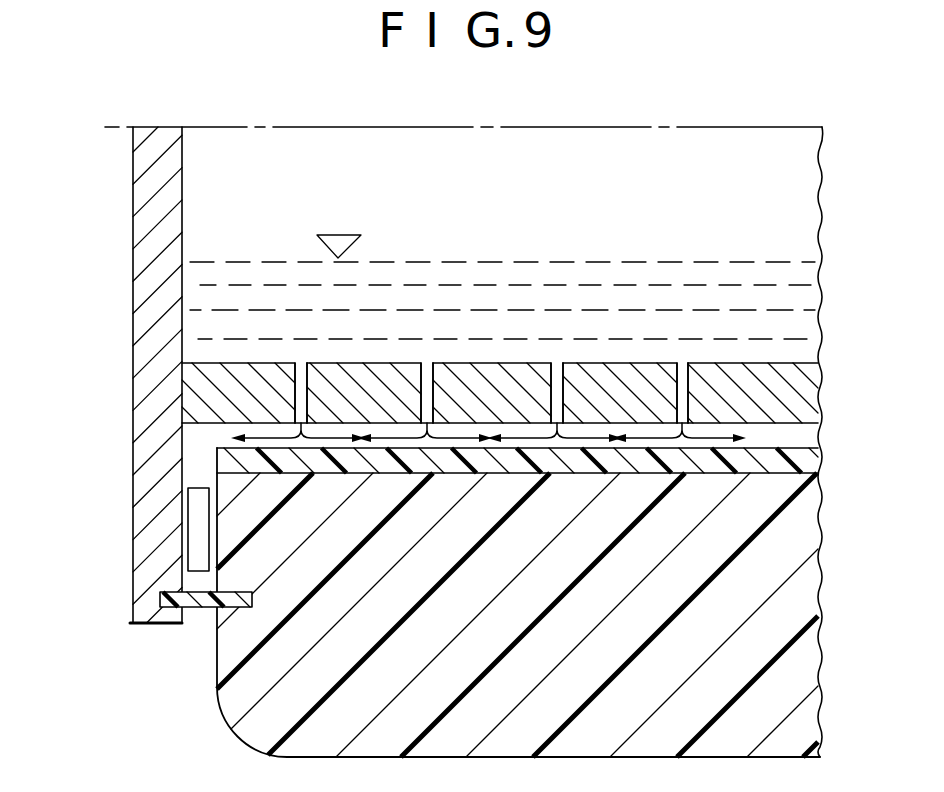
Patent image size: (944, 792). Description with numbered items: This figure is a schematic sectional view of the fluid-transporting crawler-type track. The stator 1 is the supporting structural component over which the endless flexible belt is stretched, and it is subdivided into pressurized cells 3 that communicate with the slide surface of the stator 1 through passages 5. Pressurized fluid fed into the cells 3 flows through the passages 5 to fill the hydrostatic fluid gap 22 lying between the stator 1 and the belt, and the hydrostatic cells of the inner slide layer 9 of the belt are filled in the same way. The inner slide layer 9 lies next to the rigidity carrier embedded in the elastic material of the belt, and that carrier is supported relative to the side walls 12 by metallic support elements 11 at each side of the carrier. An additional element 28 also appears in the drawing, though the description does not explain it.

The side wall 12 is at (157, 189).
The pressurized cell 3 is at (202, 242).
The passage 5 is at (299, 375).
The stator 1 is at (205, 394).
The hydrostatic fluid gap 22 is at (792, 438).
The inner slide layer 9 is at (793, 464).
The metallic support element 11 is at (198, 523).
The support strip 28 is at (197, 604).